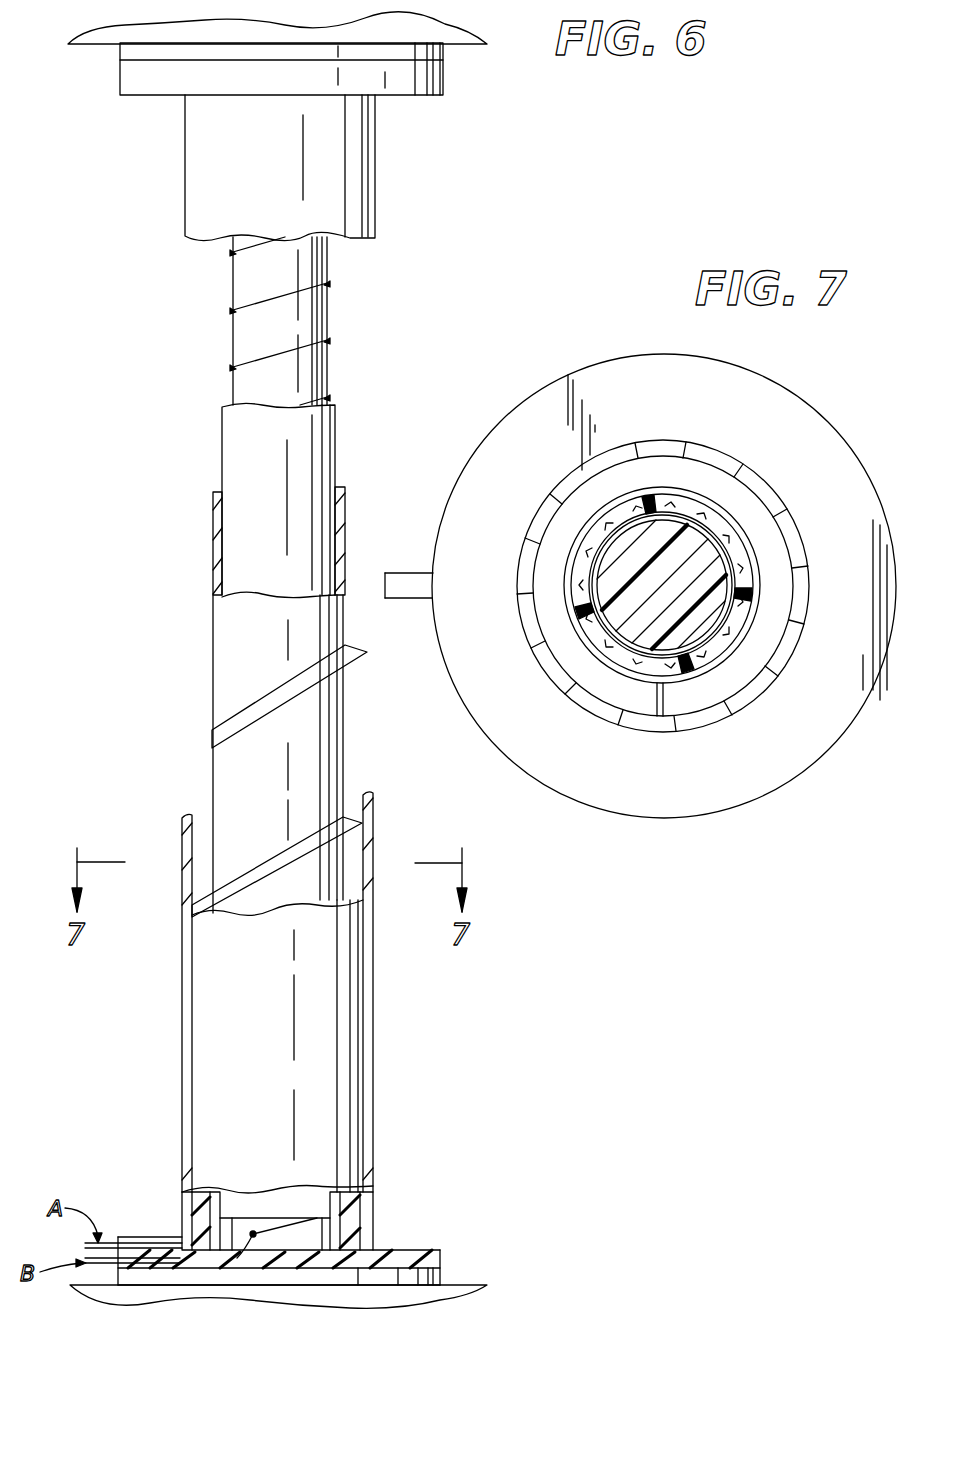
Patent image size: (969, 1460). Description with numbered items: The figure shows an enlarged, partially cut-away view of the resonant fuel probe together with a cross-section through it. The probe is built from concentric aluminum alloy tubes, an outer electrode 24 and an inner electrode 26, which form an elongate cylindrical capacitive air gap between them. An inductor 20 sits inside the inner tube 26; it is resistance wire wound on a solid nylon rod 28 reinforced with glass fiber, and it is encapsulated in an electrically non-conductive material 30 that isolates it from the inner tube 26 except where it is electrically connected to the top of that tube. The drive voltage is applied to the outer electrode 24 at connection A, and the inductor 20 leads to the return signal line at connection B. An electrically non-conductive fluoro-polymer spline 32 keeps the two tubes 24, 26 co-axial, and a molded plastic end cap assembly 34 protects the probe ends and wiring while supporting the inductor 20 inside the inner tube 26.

In FIG. 6, the inductor 20 is at (327, 340).
In FIG. 7, the inductor 20 is at (660, 683).
In FIG. 6, the outer electrode 24 is at (357, 1068).
In FIG. 7, the outer electrode 24 is at (735, 700).
In FIG. 6, the inner electrode 26 is at (222, 630).
In FIG. 7, the inner electrode 26 is at (723, 520).
In FIG. 6, the nylon rod 28 is at (312, 312).
In FIG. 7, the nylon rod 28 is at (612, 612).
In FIG. 6, the electrically non-conductive material 30 is at (222, 430).
In FIG. 7, the electrically non-conductive material 30 is at (728, 627).
In FIG. 6, the fluoro-polymer spline 32 is at (205, 735).
In FIG. 7, the fluoro-polymer spline 32 is at (647, 718).
In FIG. 6, the end cap assembly 34 is at (427, 95).
In FIG. 7, the end cap assembly 34 is at (705, 800).